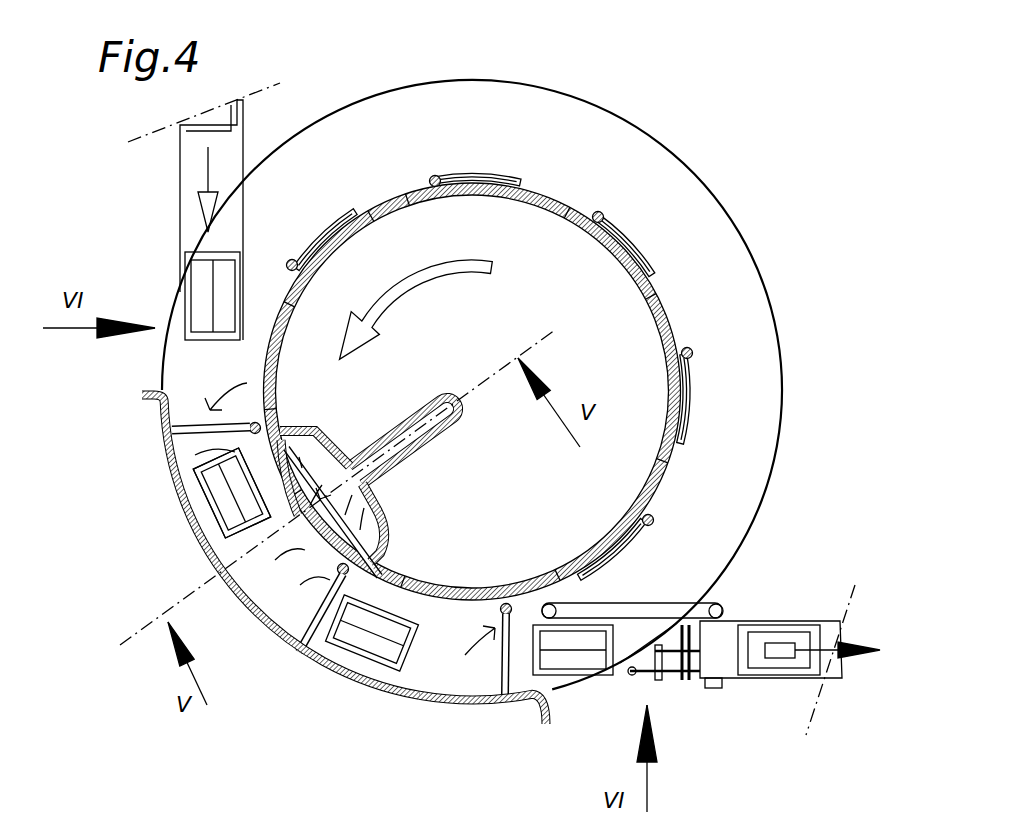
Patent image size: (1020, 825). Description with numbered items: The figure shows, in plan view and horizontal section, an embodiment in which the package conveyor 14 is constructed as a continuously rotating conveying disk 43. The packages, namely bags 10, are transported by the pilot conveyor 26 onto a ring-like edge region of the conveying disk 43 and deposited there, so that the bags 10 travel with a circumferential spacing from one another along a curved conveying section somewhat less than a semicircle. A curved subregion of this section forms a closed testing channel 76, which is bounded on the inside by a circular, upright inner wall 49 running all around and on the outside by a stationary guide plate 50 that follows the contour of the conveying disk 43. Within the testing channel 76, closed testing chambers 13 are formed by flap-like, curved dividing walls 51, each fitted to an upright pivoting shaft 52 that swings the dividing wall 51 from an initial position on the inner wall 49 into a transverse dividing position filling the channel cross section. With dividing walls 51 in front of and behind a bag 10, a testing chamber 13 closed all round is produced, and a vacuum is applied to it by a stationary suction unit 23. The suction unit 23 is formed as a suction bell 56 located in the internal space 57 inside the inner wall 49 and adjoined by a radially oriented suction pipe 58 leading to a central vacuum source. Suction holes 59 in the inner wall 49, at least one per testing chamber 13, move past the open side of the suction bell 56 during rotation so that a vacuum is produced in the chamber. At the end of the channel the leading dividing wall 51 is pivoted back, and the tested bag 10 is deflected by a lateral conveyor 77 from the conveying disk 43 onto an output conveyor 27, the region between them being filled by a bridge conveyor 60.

The bag 10 is at (205, 528).
The testing chamber 13 is at (217, 483).
The package conveyor 14 is at (155, 318).
The suction unit 23 is at (388, 497).
The pilot conveyor 26 is at (255, 130).
The output conveyor 27 is at (755, 695).
The conveying disk 43 is at (760, 243).
The inner wall 49 is at (432, 577).
The guide plate 50 is at (345, 688).
The dividing wall 51 is at (481, 172).
The pivoting shaft 52 is at (433, 172).
The suction bell 56 is at (345, 428).
The internal space 57 is at (655, 527).
The suction pipe 58 is at (433, 398).
The suction hole 59 is at (553, 205).
The bridge conveyor 60 is at (675, 690).
The testing channel 76 is at (413, 684).
The lateral conveyor 77 is at (700, 598).